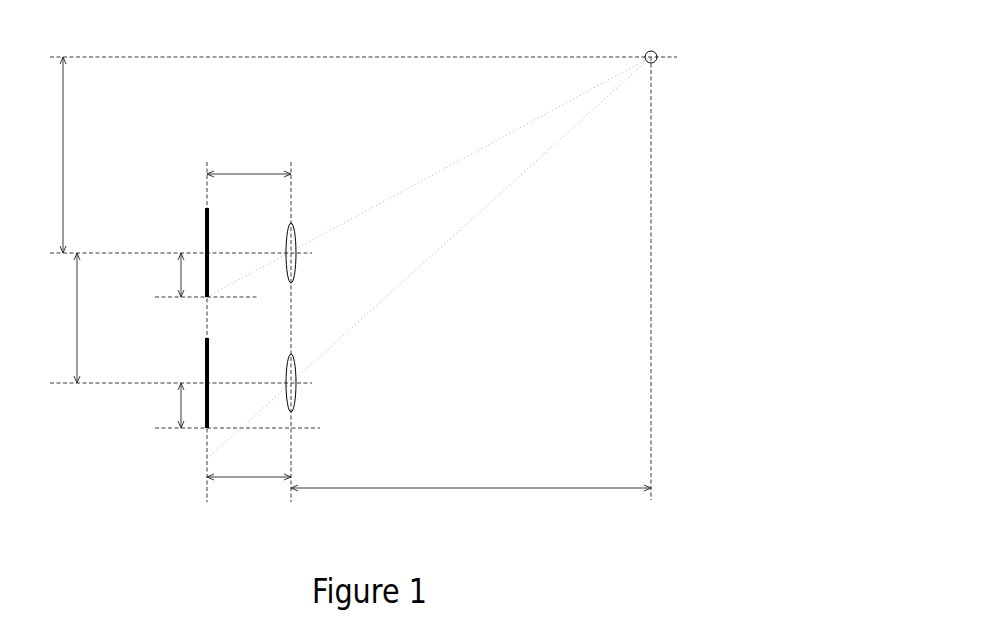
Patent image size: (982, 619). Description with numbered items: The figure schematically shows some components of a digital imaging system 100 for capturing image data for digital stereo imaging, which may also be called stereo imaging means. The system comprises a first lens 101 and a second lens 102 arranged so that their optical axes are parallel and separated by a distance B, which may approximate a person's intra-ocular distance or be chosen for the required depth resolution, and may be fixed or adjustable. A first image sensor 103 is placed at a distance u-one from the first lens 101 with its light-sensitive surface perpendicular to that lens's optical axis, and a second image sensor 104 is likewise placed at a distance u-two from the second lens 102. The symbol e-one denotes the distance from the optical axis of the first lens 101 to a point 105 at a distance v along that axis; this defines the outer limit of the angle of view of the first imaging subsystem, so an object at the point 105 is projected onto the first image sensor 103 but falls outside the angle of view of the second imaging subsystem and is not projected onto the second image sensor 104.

The digital imaging system 100 is at (357, 14).
The first lens 101 is at (296, 270).
The second lens 102 is at (296, 405).
The first image sensor 103 is at (207, 228).
The second image sensor 104 is at (207, 357).
The point 105 is at (645, 57).